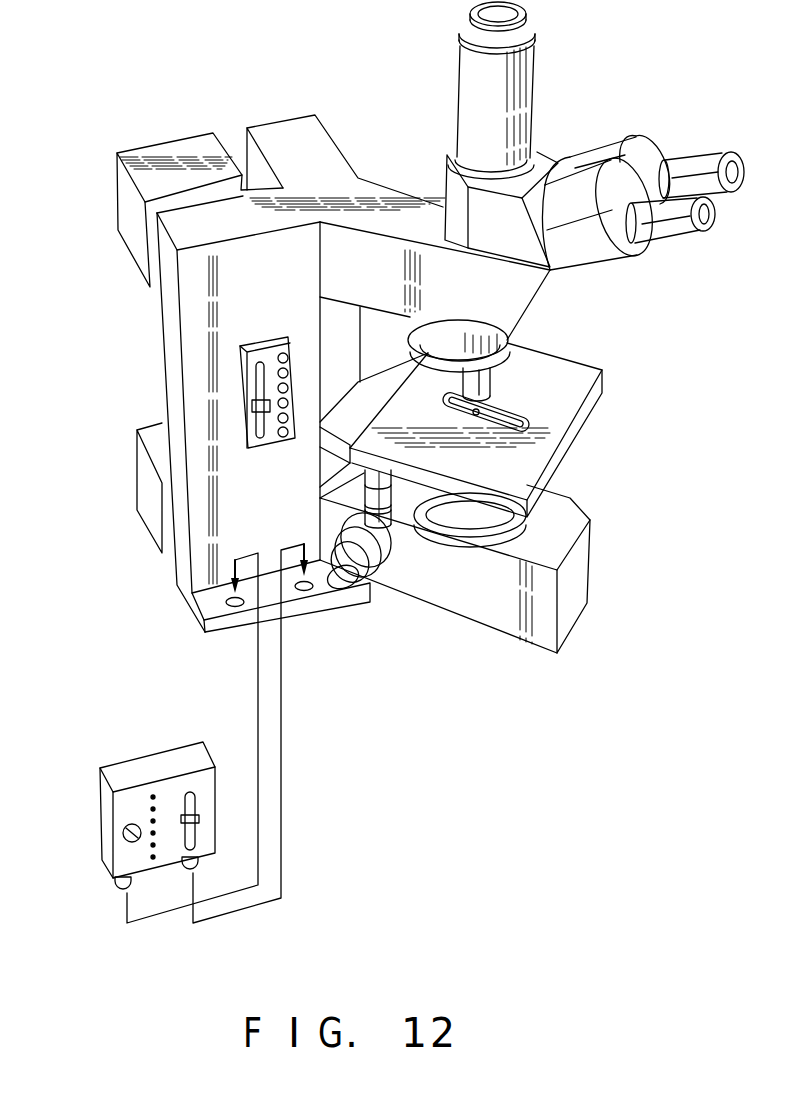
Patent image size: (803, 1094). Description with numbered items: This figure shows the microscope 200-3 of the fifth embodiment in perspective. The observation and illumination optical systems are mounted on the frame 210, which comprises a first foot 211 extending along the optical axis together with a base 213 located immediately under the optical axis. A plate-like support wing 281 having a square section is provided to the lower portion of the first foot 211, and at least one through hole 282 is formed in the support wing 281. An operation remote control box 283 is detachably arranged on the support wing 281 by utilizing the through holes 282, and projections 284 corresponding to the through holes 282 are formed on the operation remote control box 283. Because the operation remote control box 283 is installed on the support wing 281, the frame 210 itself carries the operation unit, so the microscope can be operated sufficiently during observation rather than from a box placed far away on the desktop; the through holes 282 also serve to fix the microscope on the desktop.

The microscope 200-3 is at (426, 92).
The frame 210 is at (150, 395).
The first foot 211 is at (177, 533).
The base 213 is at (485, 617).
The support wing 281 is at (207, 605).
The through hole 282 is at (317, 598).
The operation remote control box 283 is at (153, 762).
The projection 284 is at (117, 882).